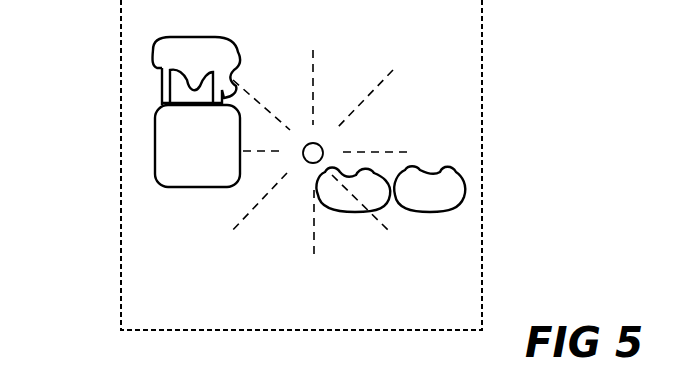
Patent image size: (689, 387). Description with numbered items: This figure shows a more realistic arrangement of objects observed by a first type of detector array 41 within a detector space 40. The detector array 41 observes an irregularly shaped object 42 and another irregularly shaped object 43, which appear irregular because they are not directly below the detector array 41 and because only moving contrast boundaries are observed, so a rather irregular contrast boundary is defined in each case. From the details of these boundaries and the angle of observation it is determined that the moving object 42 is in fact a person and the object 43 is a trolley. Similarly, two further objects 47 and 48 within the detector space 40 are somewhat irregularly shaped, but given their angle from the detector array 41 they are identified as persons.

The detector space 40 is at (483, 100).
The first type of detector array 41 is at (316, 144).
The irregularly shaped object 42 is at (152, 53).
The irregularly shaped object 43 is at (155, 157).
The object 47 is at (345, 212).
The object 48 is at (427, 212).